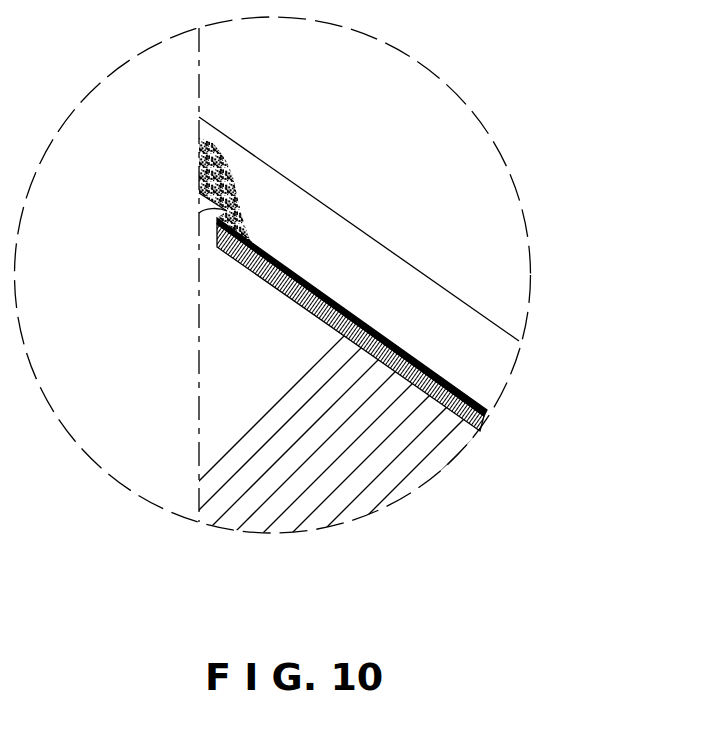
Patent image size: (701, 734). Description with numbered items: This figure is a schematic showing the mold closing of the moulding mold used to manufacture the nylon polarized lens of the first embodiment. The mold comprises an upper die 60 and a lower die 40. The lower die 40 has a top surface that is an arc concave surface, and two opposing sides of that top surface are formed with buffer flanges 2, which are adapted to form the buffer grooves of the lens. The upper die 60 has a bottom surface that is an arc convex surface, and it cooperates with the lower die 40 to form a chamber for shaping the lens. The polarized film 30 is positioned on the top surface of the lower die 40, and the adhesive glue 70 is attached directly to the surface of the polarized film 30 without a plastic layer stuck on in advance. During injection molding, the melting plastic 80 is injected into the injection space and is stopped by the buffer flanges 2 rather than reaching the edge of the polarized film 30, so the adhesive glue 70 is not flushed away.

The buffer flange 2 is at (198, 212).
The polarized film 30 is at (480, 432).
The lower die 40 is at (372, 483).
The upper die 60 is at (497, 255).
The adhesive glue 70 is at (488, 417).
The melting plastic 80 is at (198, 173).